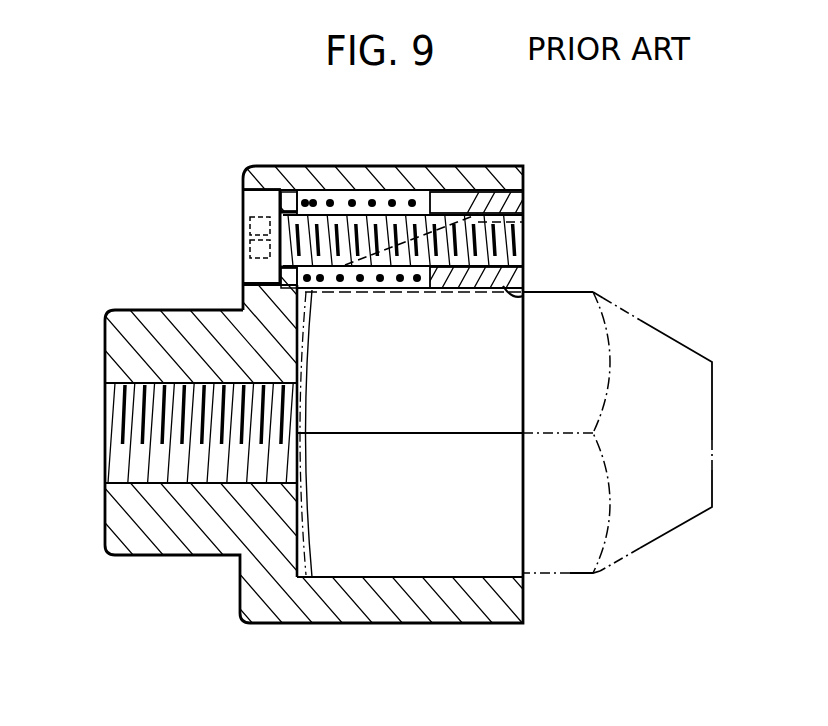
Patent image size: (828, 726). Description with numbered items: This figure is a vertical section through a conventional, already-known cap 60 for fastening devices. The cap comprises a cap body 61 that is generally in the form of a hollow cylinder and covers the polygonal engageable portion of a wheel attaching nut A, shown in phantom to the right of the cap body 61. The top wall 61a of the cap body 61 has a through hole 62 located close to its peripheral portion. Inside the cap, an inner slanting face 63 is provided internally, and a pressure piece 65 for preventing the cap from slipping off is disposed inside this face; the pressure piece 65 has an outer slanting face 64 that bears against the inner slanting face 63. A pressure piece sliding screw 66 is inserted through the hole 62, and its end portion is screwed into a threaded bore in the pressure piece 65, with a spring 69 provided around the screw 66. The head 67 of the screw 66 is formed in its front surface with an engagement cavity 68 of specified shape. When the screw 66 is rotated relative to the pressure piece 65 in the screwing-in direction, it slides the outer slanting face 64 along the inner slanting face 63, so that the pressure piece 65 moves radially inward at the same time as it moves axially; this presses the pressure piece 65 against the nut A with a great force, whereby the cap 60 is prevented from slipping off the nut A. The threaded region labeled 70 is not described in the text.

The cap 60 is at (230, 585).
The cap body 61 is at (432, 608).
The top wall 61a is at (362, 197).
The through hole 62 is at (264, 198).
The inner slanting face 63 is at (458, 190).
The outer slanting face 64 is at (523, 222).
The pressure piece 65 is at (510, 287).
The pressure piece sliding screw 66 is at (397, 225).
The head 67 is at (291, 200).
The engagement cavity 68 is at (245, 237).
The spring 69 is at (328, 200).
The threaded bore 70 is at (133, 425).
The wheel attaching nut A is at (595, 578).